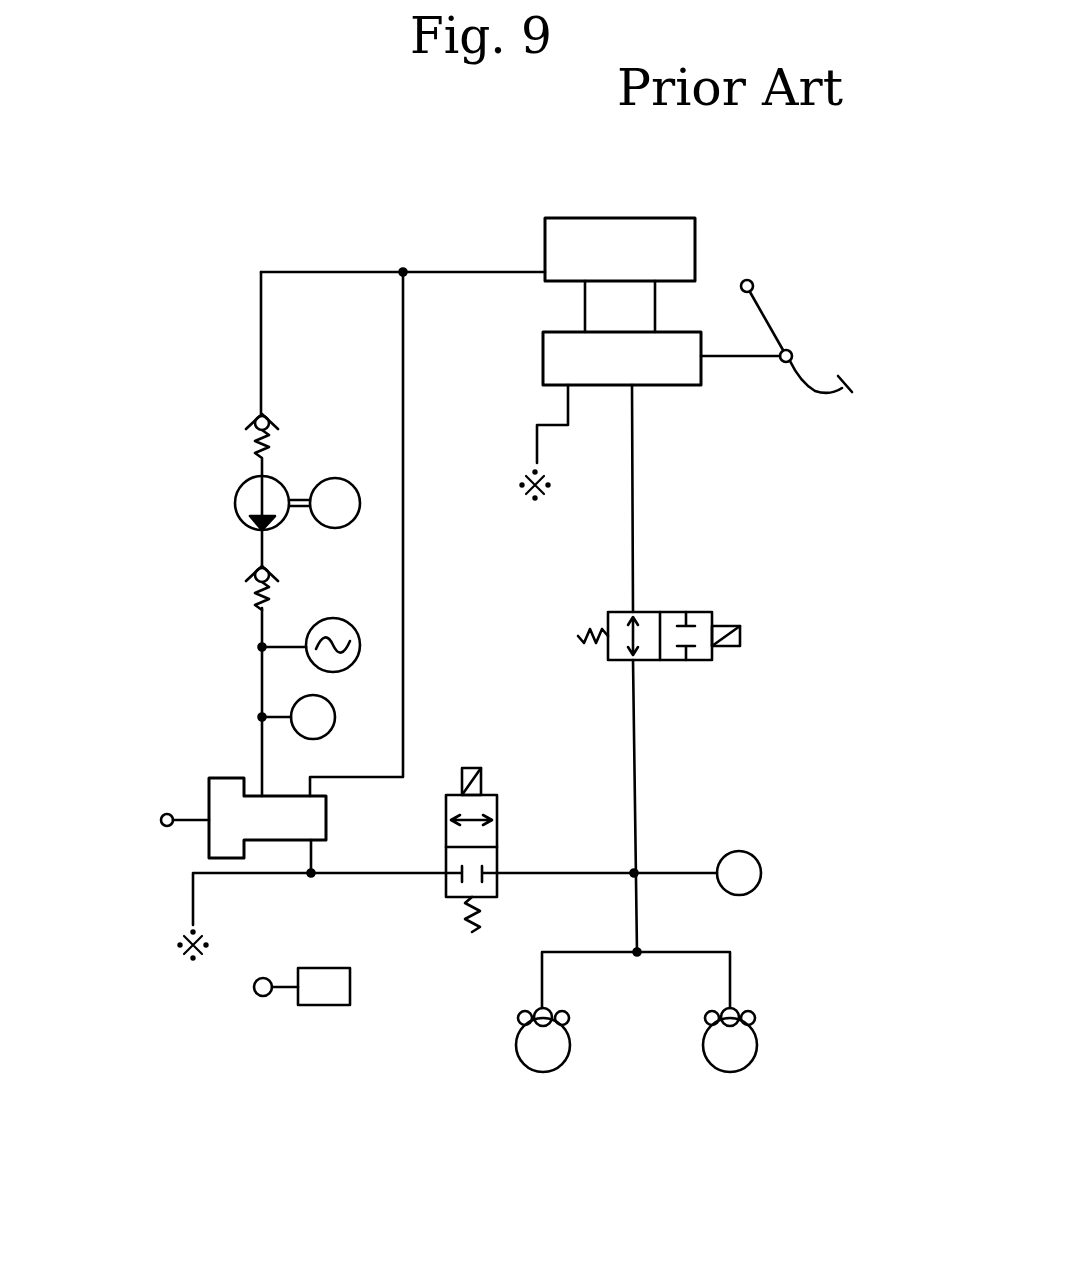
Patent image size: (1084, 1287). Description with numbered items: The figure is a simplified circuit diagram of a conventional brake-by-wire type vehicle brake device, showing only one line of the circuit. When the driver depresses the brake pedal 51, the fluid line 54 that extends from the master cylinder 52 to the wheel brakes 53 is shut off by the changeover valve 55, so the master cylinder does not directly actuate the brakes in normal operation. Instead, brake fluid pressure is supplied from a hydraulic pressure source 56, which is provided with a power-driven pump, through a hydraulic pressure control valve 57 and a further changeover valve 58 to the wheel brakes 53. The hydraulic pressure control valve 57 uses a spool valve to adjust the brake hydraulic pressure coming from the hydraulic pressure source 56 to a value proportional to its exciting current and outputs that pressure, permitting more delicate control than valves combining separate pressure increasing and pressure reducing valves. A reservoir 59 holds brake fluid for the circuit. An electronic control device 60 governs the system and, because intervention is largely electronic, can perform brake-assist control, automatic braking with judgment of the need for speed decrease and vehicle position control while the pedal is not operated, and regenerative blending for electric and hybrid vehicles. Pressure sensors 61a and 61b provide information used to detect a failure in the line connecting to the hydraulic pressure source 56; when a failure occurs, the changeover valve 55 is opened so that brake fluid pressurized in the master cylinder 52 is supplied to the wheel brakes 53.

The brake pedal 51 is at (846, 383).
The master cylinder 52 is at (681, 368).
The wheel brakes 53 is at (718, 1045).
The fluid line 54 is at (633, 528).
The changeover valve 55 is at (703, 650).
The hydraulic pressure source 56 is at (217, 500).
The hydraulic pressure control valve 57 is at (212, 786).
The changeover valve 58 is at (488, 838).
The reservoir 59 is at (669, 236).
The electronic control device 60 is at (325, 1005).
The pressure sensor 61a is at (335, 720).
The pressure sensor 61b is at (752, 856).